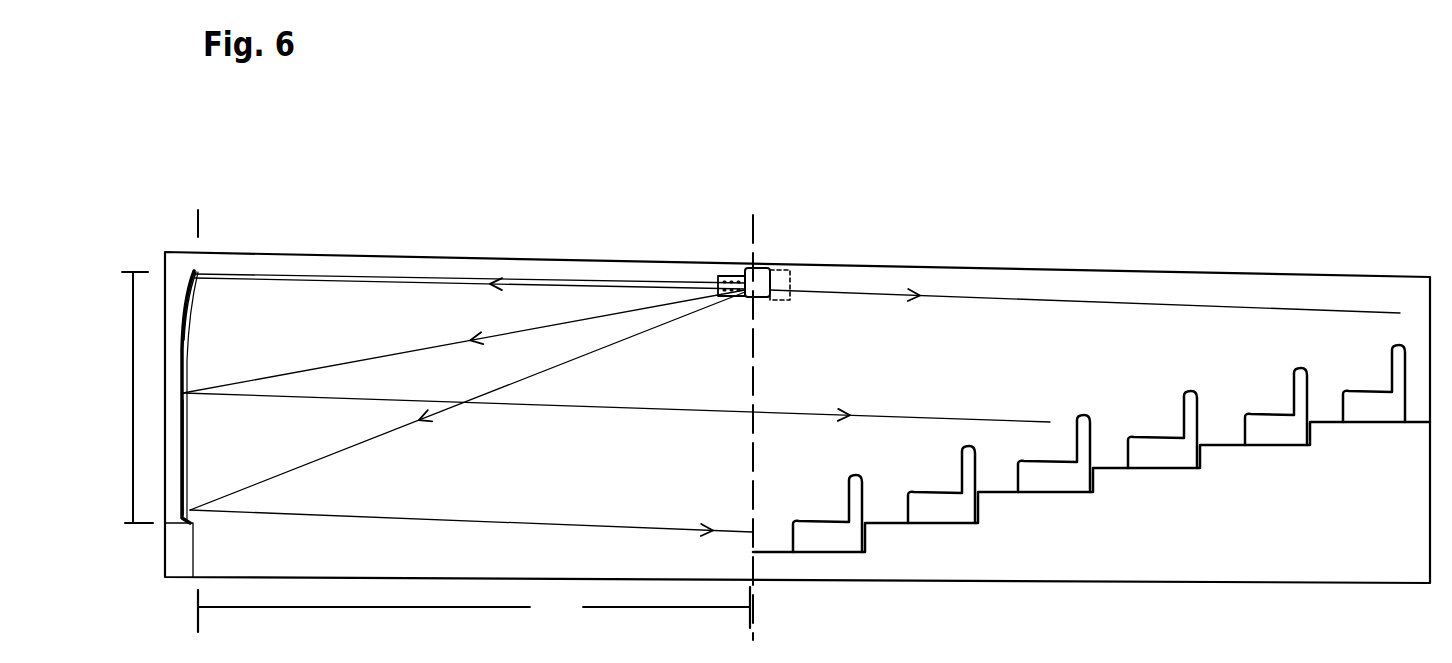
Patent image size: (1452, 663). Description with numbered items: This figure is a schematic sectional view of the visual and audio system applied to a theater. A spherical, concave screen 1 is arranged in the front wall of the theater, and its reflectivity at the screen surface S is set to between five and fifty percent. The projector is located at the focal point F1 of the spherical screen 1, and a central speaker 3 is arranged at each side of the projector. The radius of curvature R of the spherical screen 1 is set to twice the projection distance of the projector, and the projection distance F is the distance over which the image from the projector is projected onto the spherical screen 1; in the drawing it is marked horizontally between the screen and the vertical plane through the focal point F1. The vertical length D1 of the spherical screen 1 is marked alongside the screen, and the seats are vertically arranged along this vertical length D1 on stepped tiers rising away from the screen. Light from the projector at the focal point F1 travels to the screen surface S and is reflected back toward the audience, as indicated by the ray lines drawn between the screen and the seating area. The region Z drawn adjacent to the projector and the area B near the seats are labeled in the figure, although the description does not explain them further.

The spherical screen 1 is at (195, 330).
The radius of curvature R is at (205, 285).
The screen surface S is at (190, 462).
The vertical length D1 is at (132, 397).
The focal point F1 is at (772, 270).
The projection lens unit Z is at (725, 312).
The central speaker 3 is at (782, 298).
The audience seat B is at (872, 468).
The projection distance F is at (474, 609).